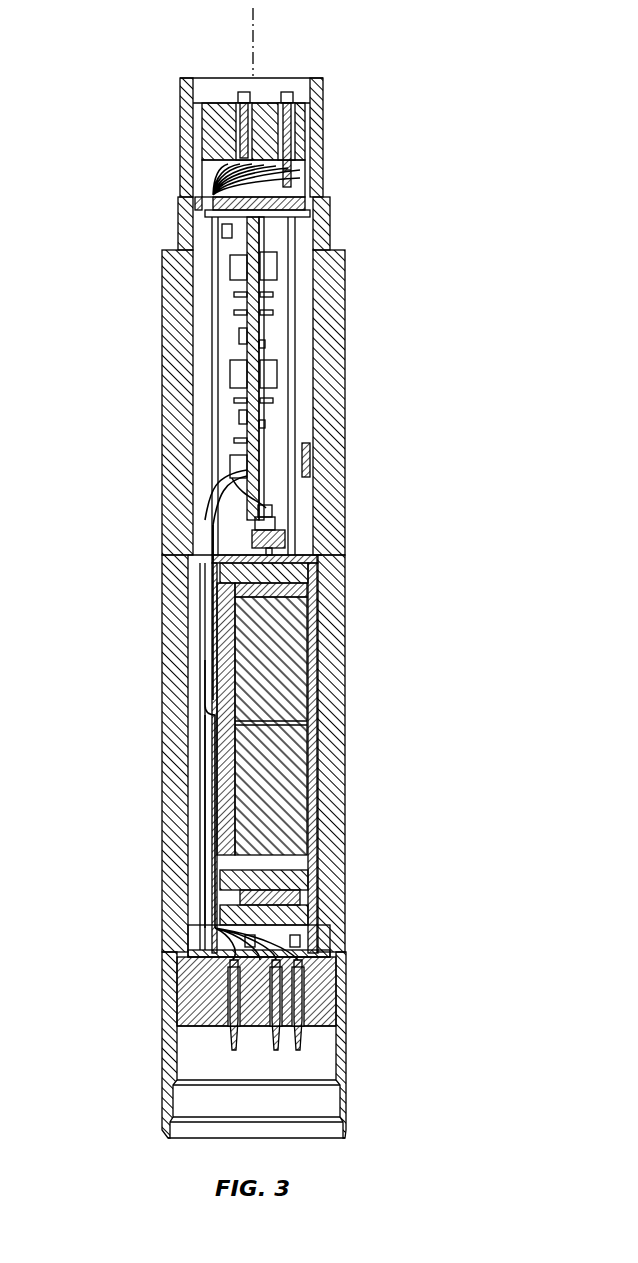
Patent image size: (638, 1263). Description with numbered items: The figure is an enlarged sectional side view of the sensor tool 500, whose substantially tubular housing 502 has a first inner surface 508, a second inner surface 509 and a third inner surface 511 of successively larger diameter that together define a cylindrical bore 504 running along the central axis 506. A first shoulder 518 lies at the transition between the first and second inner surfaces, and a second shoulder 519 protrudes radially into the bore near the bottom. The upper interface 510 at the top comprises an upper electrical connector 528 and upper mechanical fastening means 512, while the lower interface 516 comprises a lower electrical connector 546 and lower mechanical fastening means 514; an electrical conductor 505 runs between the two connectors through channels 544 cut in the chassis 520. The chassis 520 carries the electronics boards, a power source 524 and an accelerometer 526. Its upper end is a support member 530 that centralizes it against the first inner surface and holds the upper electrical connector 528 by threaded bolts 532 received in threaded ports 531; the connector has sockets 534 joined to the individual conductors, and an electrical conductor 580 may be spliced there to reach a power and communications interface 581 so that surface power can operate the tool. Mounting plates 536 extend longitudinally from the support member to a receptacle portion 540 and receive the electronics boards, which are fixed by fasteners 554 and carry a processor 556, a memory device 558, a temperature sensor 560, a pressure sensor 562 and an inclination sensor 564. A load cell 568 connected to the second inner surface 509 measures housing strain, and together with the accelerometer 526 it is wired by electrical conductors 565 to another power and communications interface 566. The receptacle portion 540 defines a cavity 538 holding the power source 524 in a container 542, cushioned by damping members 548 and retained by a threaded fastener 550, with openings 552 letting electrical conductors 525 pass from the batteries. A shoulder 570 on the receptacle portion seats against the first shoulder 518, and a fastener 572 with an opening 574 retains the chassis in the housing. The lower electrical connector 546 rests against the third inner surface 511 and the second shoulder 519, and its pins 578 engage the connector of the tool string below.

The sensor tool 500 is at (158, 48).
The housing 502 is at (350, 356).
The bore 504 is at (302, 256).
The electrical conductor 505 is at (212, 258).
The central axis 506 is at (262, 34).
The first inner surface 508 is at (166, 334).
The second inner surface 509 is at (166, 650).
The upper interface 510 is at (176, 102).
The third inner surface 511 is at (180, 990).
The upper mechanical fastening means 512 is at (325, 150).
The lower mechanical fastening means 514 is at (344, 1102).
The lower interface 516 is at (160, 1100).
The first shoulder 518 is at (320, 560).
The second shoulder 519 is at (188, 938).
The chassis 520 is at (210, 396).
The power source 524 is at (305, 632).
The electrical conductors 525 is at (226, 742).
The accelerometer 526 is at (278, 520).
The upper electrical connector 528 is at (302, 118).
The support member 530 is at (300, 204).
The threaded ports 531 is at (296, 176).
The threaded bolts 532 is at (298, 148).
The sockets 534 is at (226, 150).
The mounting plates 536 is at (226, 520).
The cavity 538 is at (310, 660).
The receptacle portion 540 is at (316, 676).
The container 542 is at (206, 610).
The channels 544 is at (210, 205).
The lower electrical connector 546 is at (302, 988).
The damping members 548 is at (300, 580).
The fastener 550 is at (302, 896).
The openings 552 is at (222, 576).
The fasteners 554 is at (292, 396).
The processor 556 is at (230, 376).
The memory device 558 is at (230, 268).
The temperature sensor 560 is at (282, 440).
The pressure sensor 562 is at (312, 345).
The inclination sensor 564 is at (322, 276).
The electrical conductors 565 is at (228, 530).
The power and communications interface 566 is at (230, 462).
The load cell 568 is at (312, 456).
The shoulder 570 is at (306, 540).
The fastener 572 is at (306, 916).
The opening 574 is at (322, 956).
The pins 578 is at (234, 1040).
The electrical conductor 580 is at (222, 232).
The power and communications interface 581 is at (292, 214).